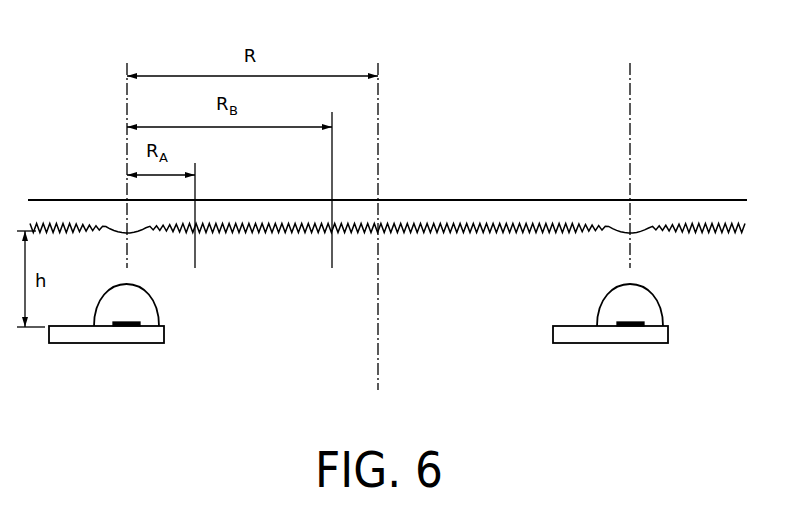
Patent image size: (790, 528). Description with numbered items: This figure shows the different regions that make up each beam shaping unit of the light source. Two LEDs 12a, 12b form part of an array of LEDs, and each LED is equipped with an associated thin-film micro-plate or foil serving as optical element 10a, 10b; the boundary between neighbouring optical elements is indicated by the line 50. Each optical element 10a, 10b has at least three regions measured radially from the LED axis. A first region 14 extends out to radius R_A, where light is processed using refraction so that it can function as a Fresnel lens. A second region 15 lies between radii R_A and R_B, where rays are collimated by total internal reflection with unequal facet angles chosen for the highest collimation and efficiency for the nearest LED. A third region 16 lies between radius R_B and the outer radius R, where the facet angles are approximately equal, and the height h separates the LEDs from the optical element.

The optical element 10a is at (60, 205).
The optical element 10b is at (699, 201).
The LED 12a is at (158, 321).
The LED 12b is at (603, 303).
The first region 14 is at (172, 289).
The second region 15 is at (274, 289).
The third region 16 is at (368, 289).
The line 50 is at (378, 335).